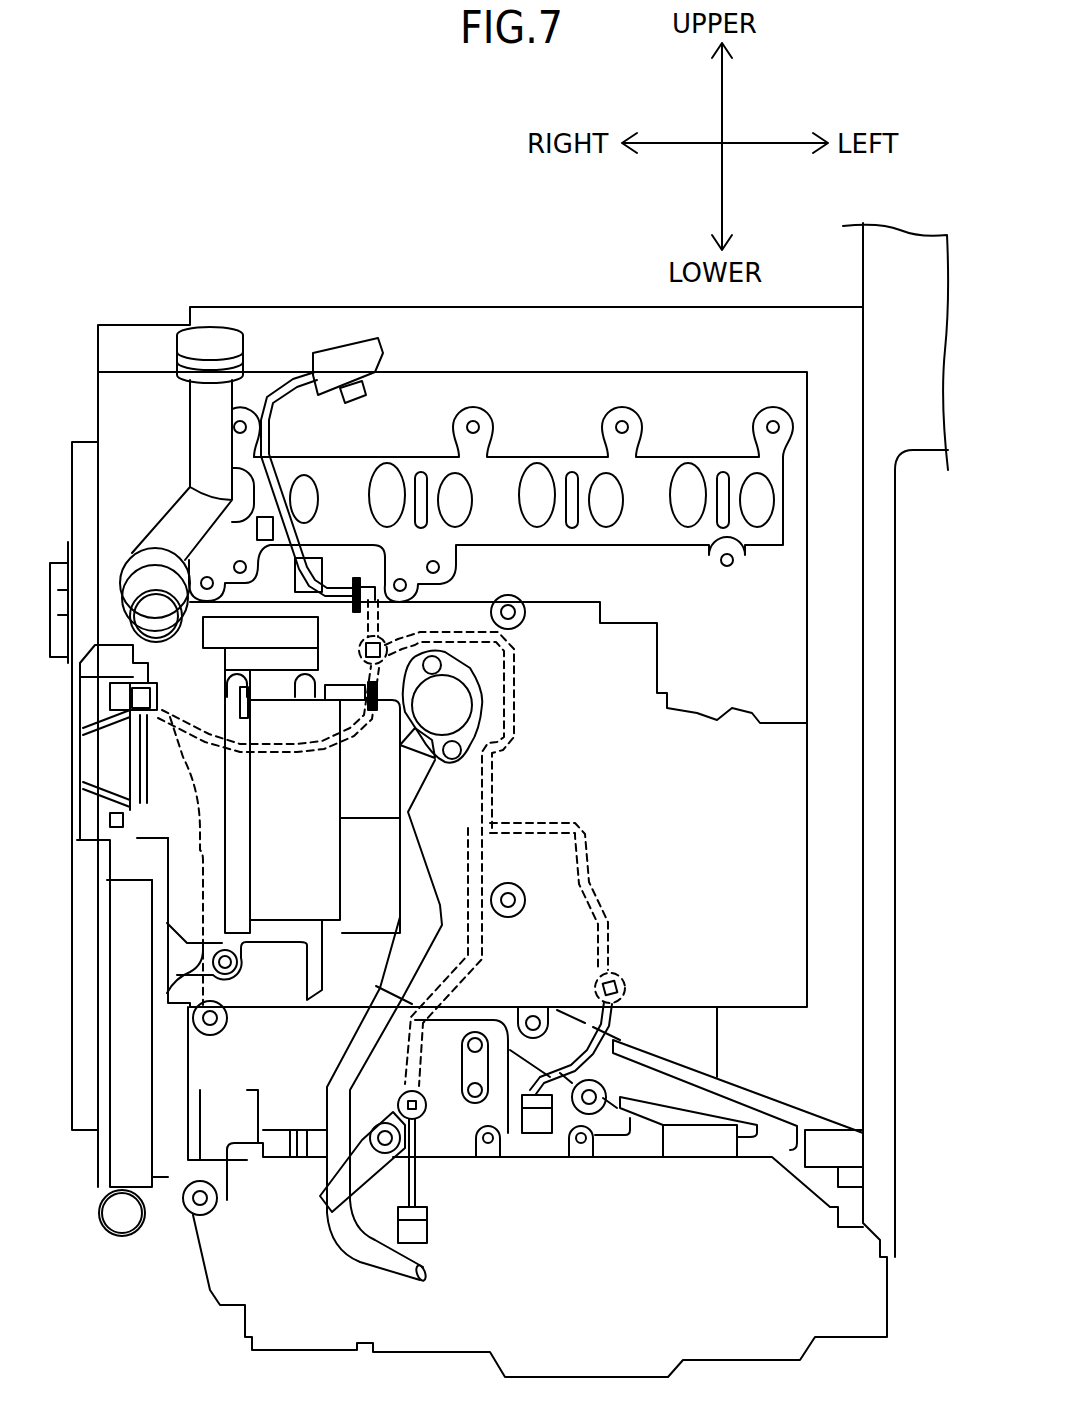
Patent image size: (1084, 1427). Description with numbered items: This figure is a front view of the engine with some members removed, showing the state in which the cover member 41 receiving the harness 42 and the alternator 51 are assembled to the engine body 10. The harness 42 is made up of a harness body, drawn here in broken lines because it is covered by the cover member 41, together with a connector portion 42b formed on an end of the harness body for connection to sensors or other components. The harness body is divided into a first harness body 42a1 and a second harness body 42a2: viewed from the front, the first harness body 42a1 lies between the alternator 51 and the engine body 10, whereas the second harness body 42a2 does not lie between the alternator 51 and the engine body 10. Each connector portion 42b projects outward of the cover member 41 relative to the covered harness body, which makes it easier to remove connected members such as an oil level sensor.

The engine body 10 is at (501, 295).
The cover member 41 is at (760, 921).
The harness 42 is at (459, 843).
The first harness body 42a1 is at (296, 752).
The second harness body 42a2 is at (585, 821).
The connector portion 42b is at (346, 338).
The alternator 51 is at (293, 905).